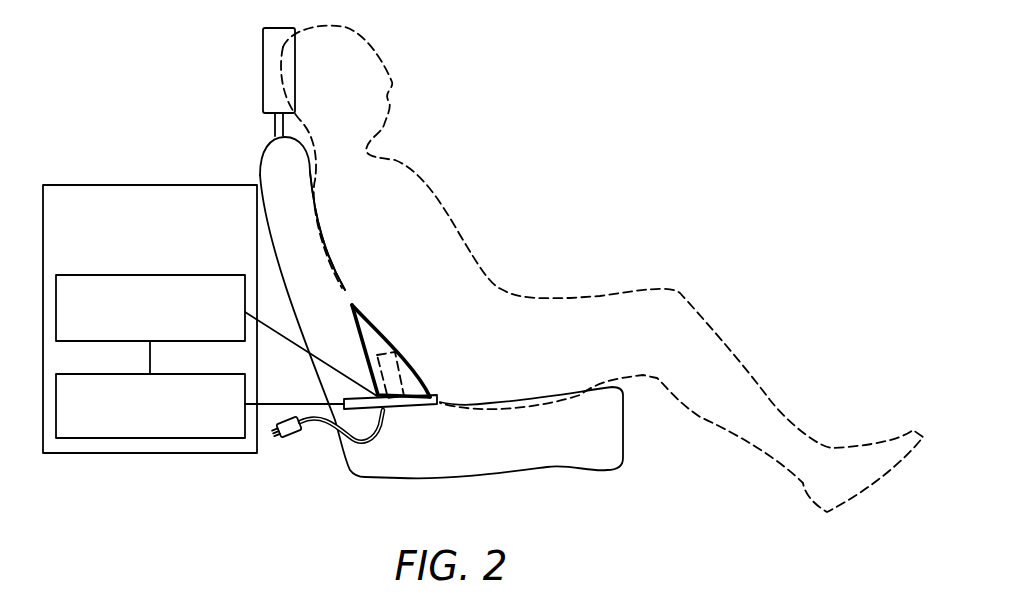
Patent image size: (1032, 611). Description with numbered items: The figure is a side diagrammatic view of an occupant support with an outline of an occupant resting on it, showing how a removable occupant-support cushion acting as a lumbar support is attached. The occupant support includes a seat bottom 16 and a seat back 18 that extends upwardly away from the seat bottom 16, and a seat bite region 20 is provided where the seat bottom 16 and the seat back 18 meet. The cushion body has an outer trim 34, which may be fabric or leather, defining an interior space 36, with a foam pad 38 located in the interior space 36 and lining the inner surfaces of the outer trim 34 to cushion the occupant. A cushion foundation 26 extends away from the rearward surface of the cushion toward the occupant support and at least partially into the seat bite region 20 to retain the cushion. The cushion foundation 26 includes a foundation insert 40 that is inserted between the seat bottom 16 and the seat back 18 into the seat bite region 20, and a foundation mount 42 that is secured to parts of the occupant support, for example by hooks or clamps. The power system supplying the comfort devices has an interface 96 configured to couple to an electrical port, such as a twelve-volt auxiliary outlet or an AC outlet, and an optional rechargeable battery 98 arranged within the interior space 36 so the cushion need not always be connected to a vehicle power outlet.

The seat bottom 16 is at (577, 437).
The seat back 18 is at (285, 178).
The seat bite region 20 is at (357, 380).
The cushion foundation 26 is at (150, 185).
The outer trim 34 is at (420, 396).
The interior space 36 is at (385, 339).
The foam pad 38 is at (423, 410).
The foundation insert 40 is at (68, 275).
The foundation mount 42 is at (150, 438).
The interface 96 is at (292, 440).
The battery 98 is at (402, 368).